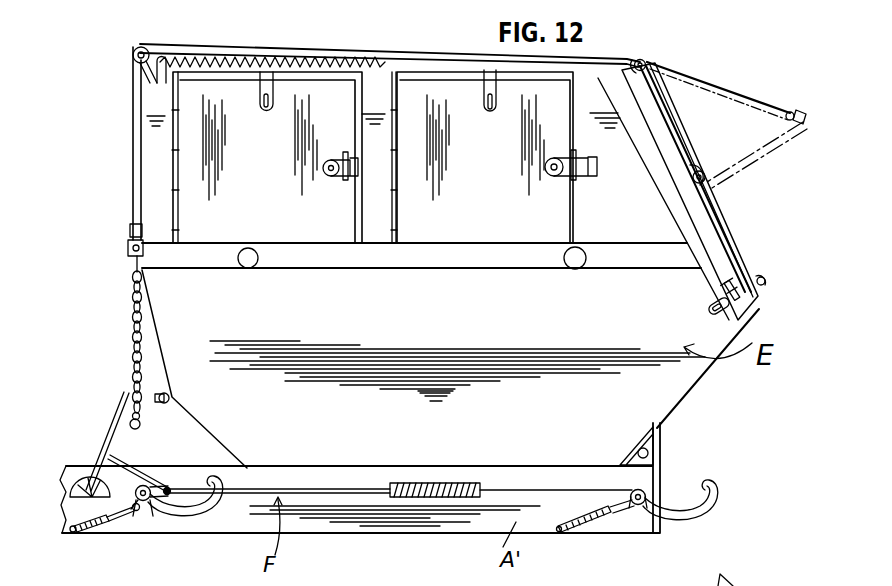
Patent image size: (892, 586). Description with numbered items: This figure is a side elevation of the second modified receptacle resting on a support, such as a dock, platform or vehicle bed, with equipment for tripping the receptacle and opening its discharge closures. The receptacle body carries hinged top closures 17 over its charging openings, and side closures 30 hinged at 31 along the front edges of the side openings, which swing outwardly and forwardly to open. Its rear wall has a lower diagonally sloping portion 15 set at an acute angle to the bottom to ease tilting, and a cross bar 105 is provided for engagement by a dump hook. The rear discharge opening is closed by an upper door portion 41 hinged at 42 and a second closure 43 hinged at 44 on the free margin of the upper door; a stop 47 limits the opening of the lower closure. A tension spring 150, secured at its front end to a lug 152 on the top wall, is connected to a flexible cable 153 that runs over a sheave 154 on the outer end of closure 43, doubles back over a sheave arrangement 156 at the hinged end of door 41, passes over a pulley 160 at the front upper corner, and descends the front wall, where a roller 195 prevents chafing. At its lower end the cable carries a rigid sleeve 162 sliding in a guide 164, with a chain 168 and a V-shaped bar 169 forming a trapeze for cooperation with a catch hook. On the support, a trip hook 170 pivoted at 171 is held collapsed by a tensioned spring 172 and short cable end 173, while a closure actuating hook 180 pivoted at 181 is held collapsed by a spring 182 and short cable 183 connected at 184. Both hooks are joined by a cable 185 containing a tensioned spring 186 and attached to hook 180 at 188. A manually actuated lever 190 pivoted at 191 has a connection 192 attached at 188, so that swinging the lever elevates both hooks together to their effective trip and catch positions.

The lower diagonally sloping portion 15 is at (363, 585).
The closures 17 is at (327, 74).
The closures 30 is at (383, 157).
The hinge 31 is at (178, 164).
The upper discharge door portion 41 is at (658, 123).
The hinge 42 is at (633, 61).
The second closure 43 is at (718, 228).
The hinge 44 is at (703, 190).
The stop 47 is at (702, 167).
The cross bar 105 is at (661, 450).
The tension spring 150 is at (235, 58).
The standard or lug 152 is at (167, 58).
The flexible cable 153 is at (133, 158).
The pulley or sheave 154 is at (767, 281).
The pulley or sheave arrangement 156 is at (648, 66).
The sheave or pulley 160 is at (133, 57).
The rigid sleeve member 162 is at (130, 231).
The guide 164 is at (128, 250).
The flexible chain 168 is at (131, 348).
The V-shaped bar 169 is at (141, 424).
The trip hook 170 is at (703, 509).
The pivot 171 is at (640, 522).
The tensioned spring 172 is at (576, 537).
The short flexible cable end 173 is at (613, 527).
The closure actuating hook 180 is at (176, 508).
The pivot 181 is at (150, 516).
The tensioned spring 182 is at (88, 540).
The short cable length 183 is at (126, 522).
The connection 184 is at (140, 522).
The cable 185 is at (341, 488).
The tensioned spring 186 is at (458, 482).
The connection 188 is at (169, 487).
The manually actuated lever 190 is at (112, 403).
The pivot 191 is at (92, 482).
The cable or other connection 192 is at (122, 466).
The roller 195 is at (170, 397).